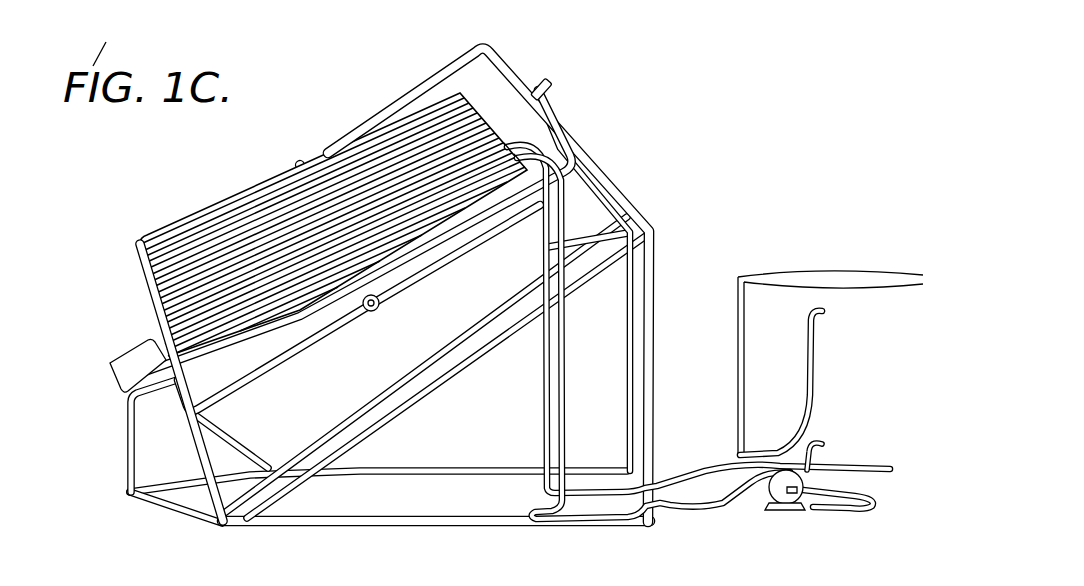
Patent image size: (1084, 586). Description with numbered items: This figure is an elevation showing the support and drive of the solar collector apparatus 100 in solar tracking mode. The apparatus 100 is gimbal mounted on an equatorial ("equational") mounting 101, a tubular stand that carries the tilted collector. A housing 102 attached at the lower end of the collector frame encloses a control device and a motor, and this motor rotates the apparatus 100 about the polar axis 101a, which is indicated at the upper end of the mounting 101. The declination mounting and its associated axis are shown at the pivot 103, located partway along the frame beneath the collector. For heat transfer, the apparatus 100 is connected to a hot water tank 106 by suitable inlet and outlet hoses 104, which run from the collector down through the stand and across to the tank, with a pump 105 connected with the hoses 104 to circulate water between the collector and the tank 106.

The apparatus 100 is at (190, 207).
The equatorial mounting 101 is at (623, 180).
The polar axis 101a is at (553, 81).
The housing 102 is at (133, 364).
The declination mounting 103 is at (370, 313).
The inlet and outlet hoses 104 is at (690, 475).
The pump 105 is at (787, 510).
The hot water tank 106 is at (808, 272).